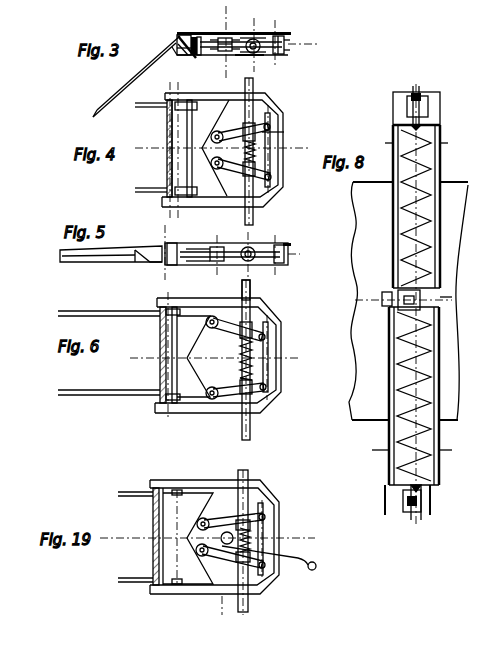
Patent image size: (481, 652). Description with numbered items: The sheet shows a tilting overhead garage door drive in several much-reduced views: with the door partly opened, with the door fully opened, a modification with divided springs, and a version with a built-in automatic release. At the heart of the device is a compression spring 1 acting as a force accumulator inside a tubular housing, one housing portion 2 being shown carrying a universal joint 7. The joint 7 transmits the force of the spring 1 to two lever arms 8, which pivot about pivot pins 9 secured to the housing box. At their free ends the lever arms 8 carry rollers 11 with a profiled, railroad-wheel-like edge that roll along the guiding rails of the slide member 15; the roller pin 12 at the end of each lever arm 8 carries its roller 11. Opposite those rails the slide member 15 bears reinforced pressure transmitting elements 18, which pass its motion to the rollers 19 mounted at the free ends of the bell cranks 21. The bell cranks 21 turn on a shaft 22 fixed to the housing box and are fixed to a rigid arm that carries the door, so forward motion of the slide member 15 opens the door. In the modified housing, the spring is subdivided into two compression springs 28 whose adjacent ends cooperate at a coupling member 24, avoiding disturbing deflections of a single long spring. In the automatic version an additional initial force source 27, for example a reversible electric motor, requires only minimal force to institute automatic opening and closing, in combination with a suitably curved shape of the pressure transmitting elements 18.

In FIG. 4, the compression spring 1 is at (254, 146).
In FIG. 6, the compression spring 1 is at (258, 357).
In FIG. 19, the compression spring 1 is at (262, 540).
In FIG. 3, the housing portion 2 is at (252, 39).
In FIG. 4, the housing portion 2 is at (254, 213).
In FIG. 3, the universal joint 7 is at (256, 51).
In FIG. 4, the universal joint 7 is at (244, 126).
In FIG. 3, the lever arm 8 is at (240, 38).
In FIG. 4, the lever arm 8 is at (270, 127).
In FIG. 3, the pivot pin 9 is at (275, 37).
In FIG. 4, the pivot pin 9 is at (272, 132).
In FIG. 3, the roller 11 is at (230, 53).
In FIG. 4, the roller 11 is at (213, 145).
In FIG. 3, the pivot nut 12 is at (222, 52).
In FIG. 4, the pivot nut 12 is at (214, 135).
In FIG. 4, the slide member 15 is at (190, 101).
In FIG. 3, the pressure transmitting element 18 is at (196, 38).
In FIG. 4, the pressure transmitting element 18 is at (168, 100).
In FIG. 3, the roller 19 is at (181, 55).
In FIG. 4, the roller 19 is at (173, 207).
In FIG. 3, the bell crank 21 is at (178, 41).
In FIG. 3, the shaft 22 is at (178, 34).
In FIG. 4, the shaft 22 is at (168, 176).
In FIG. 8, the coupling member 24 is at (384, 299).
In FIG. 19, the initial force source 27 is at (226, 596).
In FIG. 8, the spring 28 is at (398, 267).